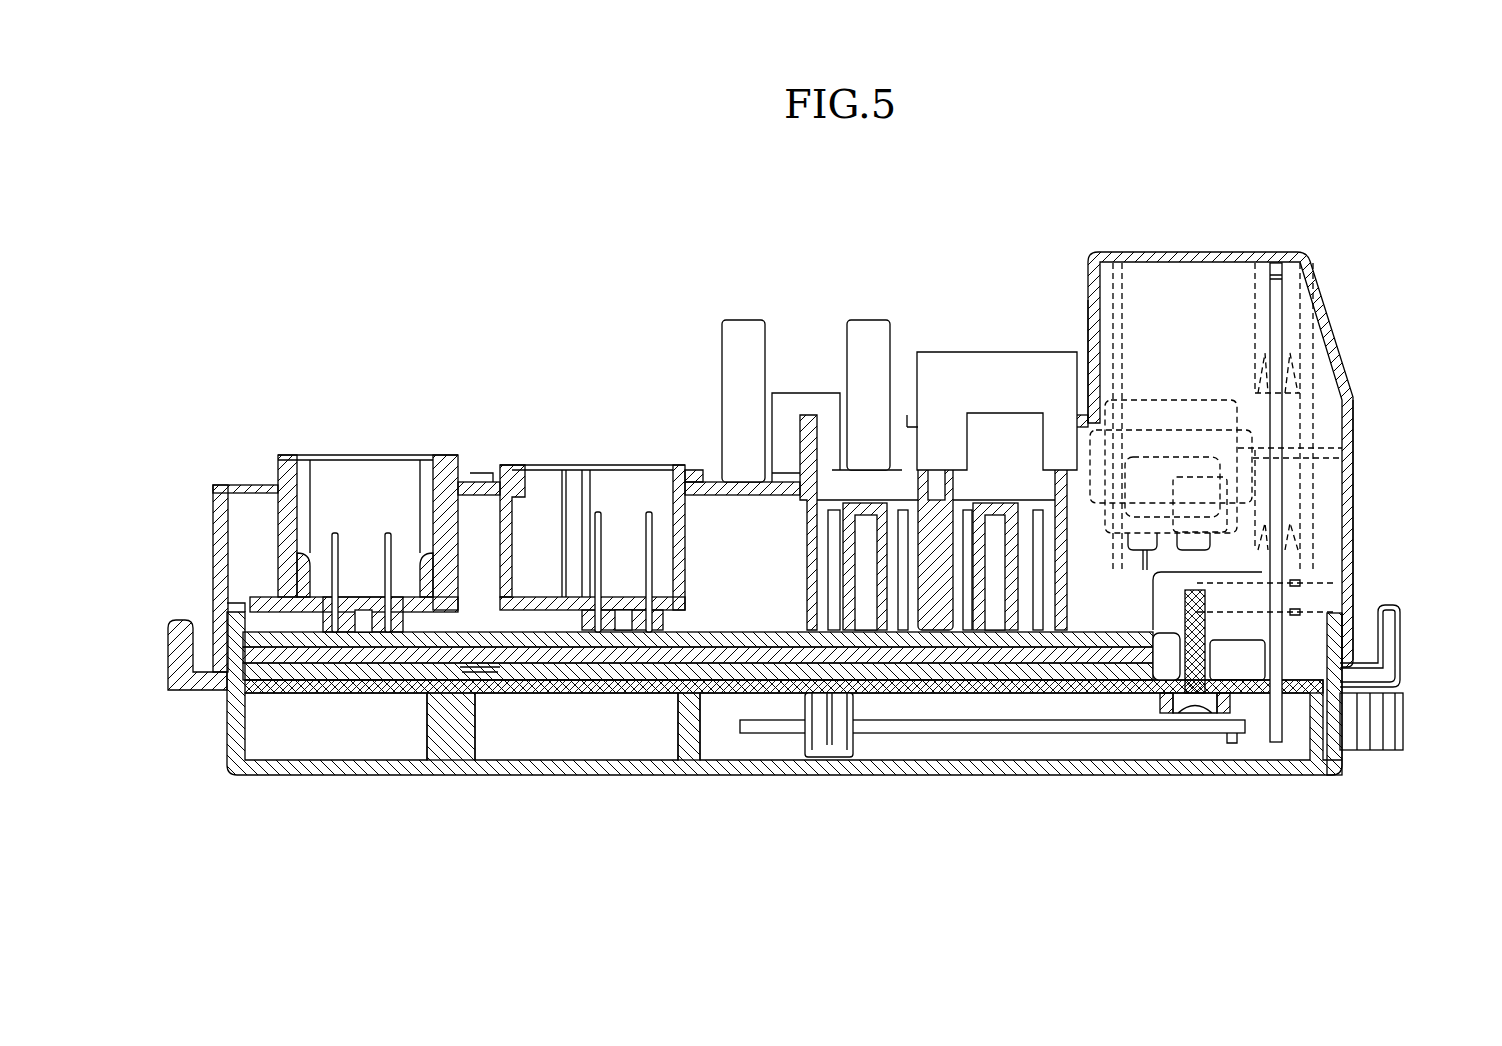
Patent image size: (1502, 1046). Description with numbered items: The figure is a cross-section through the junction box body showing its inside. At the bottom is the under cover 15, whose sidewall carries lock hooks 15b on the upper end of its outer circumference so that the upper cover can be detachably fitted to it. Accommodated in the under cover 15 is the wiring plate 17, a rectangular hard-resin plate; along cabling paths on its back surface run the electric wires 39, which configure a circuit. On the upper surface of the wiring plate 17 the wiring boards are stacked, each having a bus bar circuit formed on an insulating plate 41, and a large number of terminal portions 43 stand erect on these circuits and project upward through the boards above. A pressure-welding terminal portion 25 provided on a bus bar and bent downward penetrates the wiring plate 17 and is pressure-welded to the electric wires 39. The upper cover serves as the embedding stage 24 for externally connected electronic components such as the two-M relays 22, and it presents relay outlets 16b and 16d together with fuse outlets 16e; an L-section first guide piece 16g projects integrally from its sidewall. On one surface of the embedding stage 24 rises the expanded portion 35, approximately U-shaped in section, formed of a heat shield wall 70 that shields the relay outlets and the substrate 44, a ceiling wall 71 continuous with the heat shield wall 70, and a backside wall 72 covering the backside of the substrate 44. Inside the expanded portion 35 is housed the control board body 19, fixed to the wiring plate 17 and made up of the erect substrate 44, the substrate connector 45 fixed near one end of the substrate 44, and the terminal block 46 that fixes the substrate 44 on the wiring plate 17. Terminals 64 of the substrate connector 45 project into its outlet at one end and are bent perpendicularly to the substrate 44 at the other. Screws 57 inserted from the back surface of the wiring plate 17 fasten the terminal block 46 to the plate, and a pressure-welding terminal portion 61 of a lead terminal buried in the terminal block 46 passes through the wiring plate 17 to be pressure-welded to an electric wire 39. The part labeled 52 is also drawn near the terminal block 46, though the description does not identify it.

The under cover 15 is at (1312, 787).
The lock hooks 15b is at (180, 655).
The relay outlet 16b is at (373, 478).
The relay outlet 16d is at (607, 480).
The fuse outlets 16e is at (992, 482).
The first guide piece 16g is at (1403, 652).
The wiring plate 17 is at (673, 698).
The control board body 19 is at (1292, 400).
The 2M relays 22 is at (1030, 380).
The embedding stage 24 is at (706, 475).
The pressure-welding terminal portion 25 is at (830, 746).
The expanded portion 35 is at (1272, 247).
The electric wires 39 is at (1018, 736).
The insulating plate 41 is at (543, 641).
The terminal portions 43 is at (392, 556).
The substrate 44 is at (1284, 325).
The substrate connector 45 is at (1350, 488).
The terminal block 46 is at (1248, 656).
The bracket 52 is at (1146, 660).
The screws 57 is at (1203, 706).
The pressure-welding terminal portion 61 is at (1233, 746).
The terminals 64 is at (1302, 612).
The heat shield wall 70 is at (1086, 300).
The ceiling wall 71 is at (1205, 250).
The backside wall 72 is at (1356, 400).